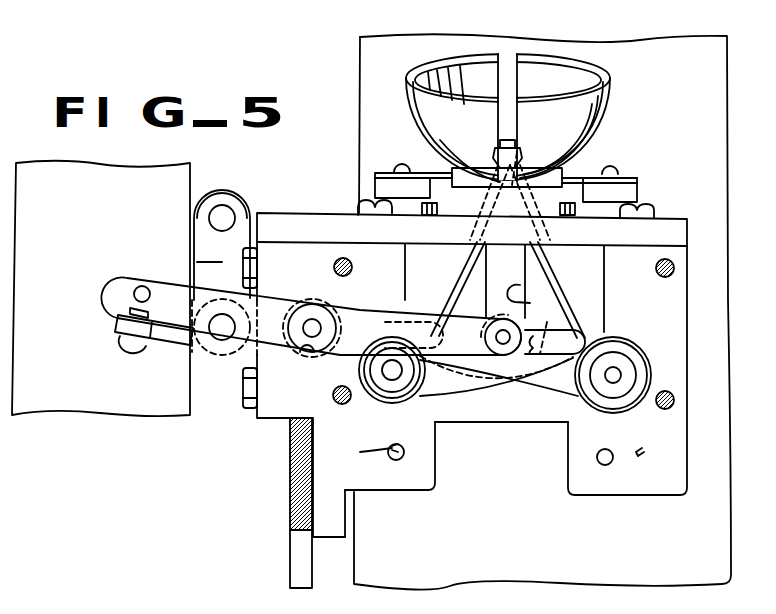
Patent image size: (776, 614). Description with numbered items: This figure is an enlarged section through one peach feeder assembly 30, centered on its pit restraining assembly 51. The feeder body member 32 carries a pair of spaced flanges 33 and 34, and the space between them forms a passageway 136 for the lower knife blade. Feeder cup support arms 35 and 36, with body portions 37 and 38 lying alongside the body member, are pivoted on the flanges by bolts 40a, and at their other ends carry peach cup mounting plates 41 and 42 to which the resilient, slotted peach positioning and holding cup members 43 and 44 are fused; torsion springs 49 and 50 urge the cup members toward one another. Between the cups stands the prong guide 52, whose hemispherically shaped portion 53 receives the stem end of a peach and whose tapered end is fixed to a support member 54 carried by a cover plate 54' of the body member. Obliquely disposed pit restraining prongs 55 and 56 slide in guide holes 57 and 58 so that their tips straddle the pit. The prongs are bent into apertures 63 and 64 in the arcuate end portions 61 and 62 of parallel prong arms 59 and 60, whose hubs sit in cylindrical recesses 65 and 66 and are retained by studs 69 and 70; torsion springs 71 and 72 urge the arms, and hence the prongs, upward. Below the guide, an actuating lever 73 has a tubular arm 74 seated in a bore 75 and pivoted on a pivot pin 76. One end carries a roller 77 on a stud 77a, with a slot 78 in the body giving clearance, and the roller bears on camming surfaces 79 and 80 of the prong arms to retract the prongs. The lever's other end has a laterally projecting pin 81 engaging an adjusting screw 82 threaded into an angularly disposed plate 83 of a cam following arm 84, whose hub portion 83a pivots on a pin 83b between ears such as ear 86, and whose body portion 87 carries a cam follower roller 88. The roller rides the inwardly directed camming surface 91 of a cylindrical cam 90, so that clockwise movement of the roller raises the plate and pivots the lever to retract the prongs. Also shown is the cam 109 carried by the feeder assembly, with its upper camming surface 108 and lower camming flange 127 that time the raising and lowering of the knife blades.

The peach feeder assembly 30 is at (620, 140).
The feeder body member 32 is at (465, 375).
The flange 33 is at (588, 477).
The flange 34 is at (420, 477).
The feeder cup support arm 35 is at (640, 190).
The feeder cup support arm 36 is at (378, 183).
The body portion 37 is at (626, 212).
The body portion 38 is at (390, 212).
The bolt 40a is at (620, 470).
The peach cup mounting plate 41 is at (612, 175).
The peach cup mounting plate 42 is at (406, 170).
The peach positioning and holding cup member 43 is at (508, 116).
The peach positioning and holding cup member 44 is at (462, 142).
The torsion spring 49 is at (641, 451).
The torsion spring 50 is at (360, 452).
The pit restraining assembly 51 is at (592, 326).
The prong guide 52 is at (490, 194).
The hemispherically shaped portion 53 is at (507, 140).
The support member 54 is at (435, 221).
The cover plate 54' is at (584, 223).
The pit restraining prong 55 is at (548, 259).
The pit restraining prong 56 is at (470, 266).
The guide hole 57 is at (499, 150).
The guide hole 58 is at (518, 160).
The prong arm 59 is at (432, 378).
The prong arm 60 is at (570, 392).
The arcuate end portion 61 is at (579, 330).
The arcuate end portion 62 is at (448, 324).
The aperture 63 is at (573, 363).
The aperture 64 is at (430, 340).
The cylindrical recess 65 is at (394, 402).
The cylindrical recess 66 is at (622, 340).
The stud 69 is at (390, 372).
The stud 70 is at (616, 373).
The torsion spring 71 is at (370, 372).
The torsion spring 72 is at (645, 366).
The actuating lever 73 is at (398, 292).
The tubular arm 74 is at (342, 318).
The bore 75 is at (304, 356).
The pivot pin 76 is at (314, 322).
The roller 77 is at (492, 316).
The stud 77a is at (494, 337).
The slot 78 is at (530, 299).
The camming surface 79 is at (549, 329).
The camming surface 80 is at (531, 338).
The laterally projecting pin 81 is at (134, 294).
The adjusting screw 82 is at (130, 314).
The angularly disposed plate 83 is at (128, 328).
The hub portion 83a is at (262, 302).
The pin 83b is at (222, 335).
The cam following arm 84 is at (221, 271).
The laterally projecting ear 86 is at (200, 343).
The body portion 87 is at (223, 272).
The cam follower roller 88 is at (238, 194).
The cylindrical cam 90 is at (101, 288).
The camming surface 91 is at (195, 175).
The upper camming surface 108 is at (300, 556).
The cam 109 is at (300, 489).
The lower camming flange 127 is at (332, 512).
The passageway 136 is at (568, 445).